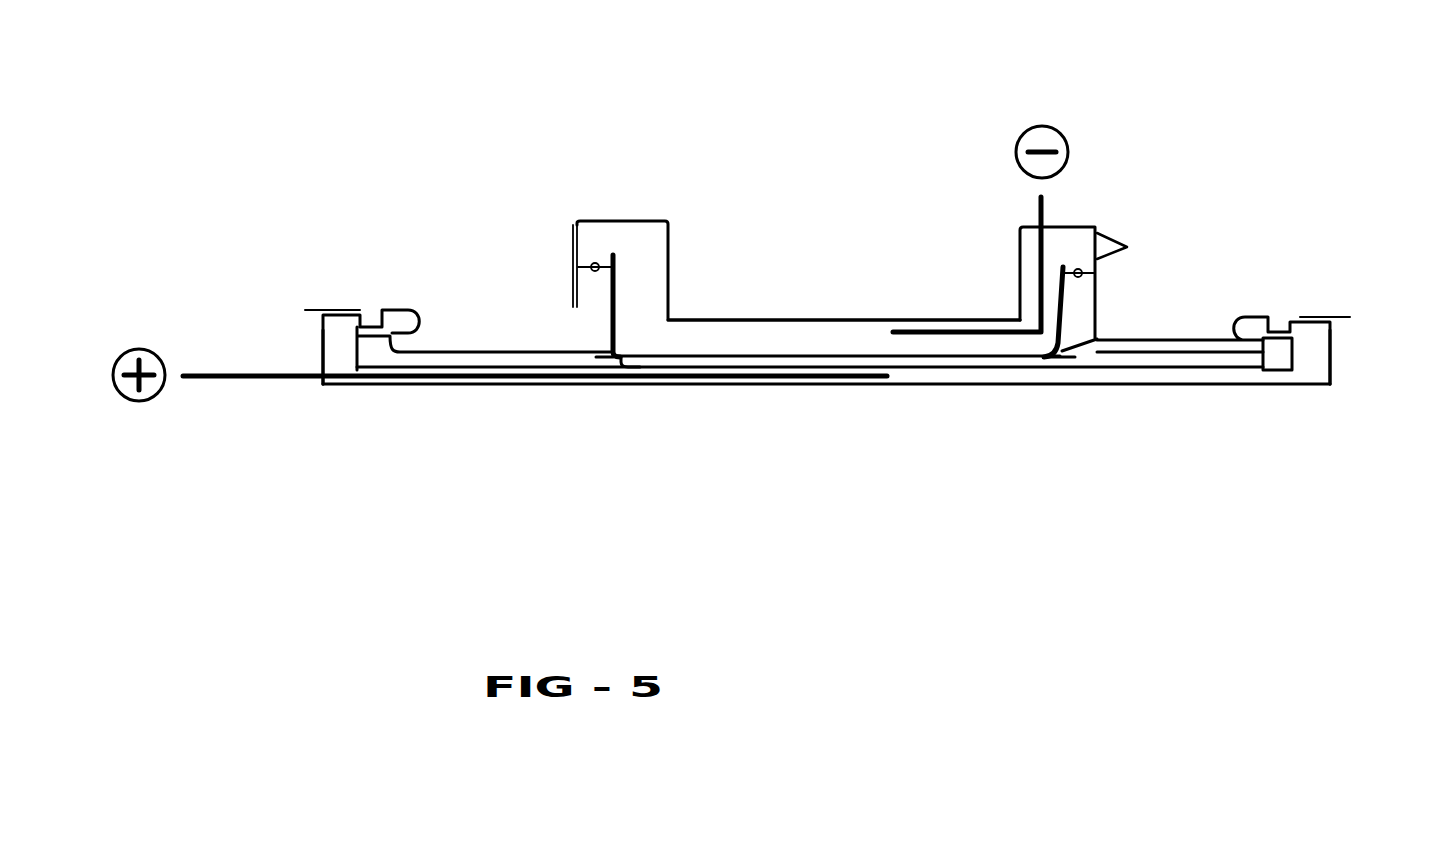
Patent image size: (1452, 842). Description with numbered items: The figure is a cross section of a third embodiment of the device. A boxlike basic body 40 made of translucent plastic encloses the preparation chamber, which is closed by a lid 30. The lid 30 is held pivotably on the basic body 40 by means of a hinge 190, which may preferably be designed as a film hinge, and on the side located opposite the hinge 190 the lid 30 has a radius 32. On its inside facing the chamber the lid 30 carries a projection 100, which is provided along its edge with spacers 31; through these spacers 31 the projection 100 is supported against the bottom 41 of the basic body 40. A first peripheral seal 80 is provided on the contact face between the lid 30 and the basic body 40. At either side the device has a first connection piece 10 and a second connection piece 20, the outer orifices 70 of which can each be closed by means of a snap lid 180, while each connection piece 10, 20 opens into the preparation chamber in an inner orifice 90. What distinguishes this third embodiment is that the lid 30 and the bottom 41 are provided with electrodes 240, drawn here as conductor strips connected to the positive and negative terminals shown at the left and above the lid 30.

The first connection piece 10 is at (1158, 347).
The second connection piece 20 is at (443, 372).
The lid 30 is at (1075, 240).
The spacers 31 is at (649, 372).
The radius 32 is at (1097, 339).
The basic body 40 is at (600, 326).
The bottom 41 is at (835, 378).
The outer orifices 70 is at (375, 348).
The first peripheral seal 80 is at (597, 267).
The inner orifice 90 is at (598, 360).
The projection 100 is at (790, 345).
The snap lid 180 is at (330, 313).
The hinge 190 is at (575, 264).
The electrodes 240 is at (905, 330).